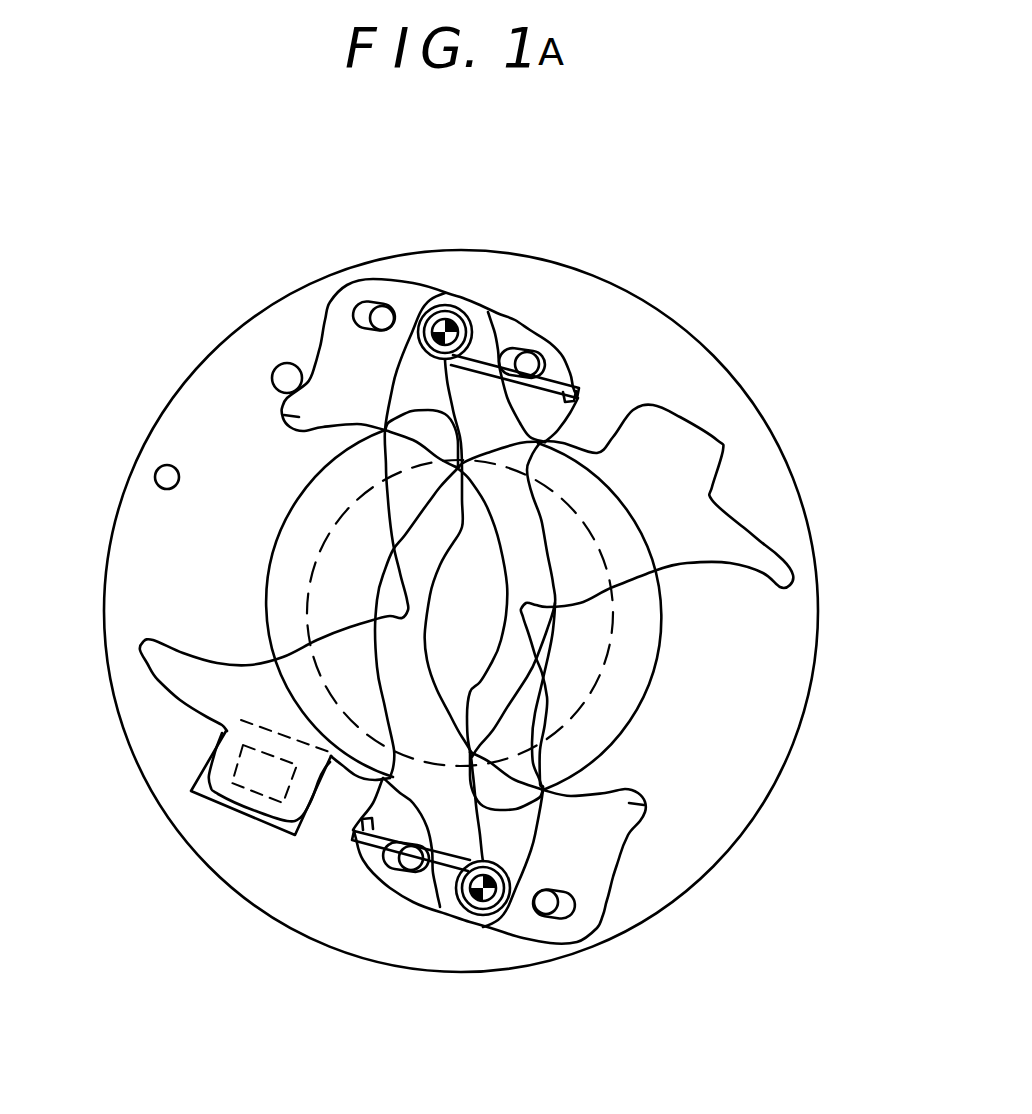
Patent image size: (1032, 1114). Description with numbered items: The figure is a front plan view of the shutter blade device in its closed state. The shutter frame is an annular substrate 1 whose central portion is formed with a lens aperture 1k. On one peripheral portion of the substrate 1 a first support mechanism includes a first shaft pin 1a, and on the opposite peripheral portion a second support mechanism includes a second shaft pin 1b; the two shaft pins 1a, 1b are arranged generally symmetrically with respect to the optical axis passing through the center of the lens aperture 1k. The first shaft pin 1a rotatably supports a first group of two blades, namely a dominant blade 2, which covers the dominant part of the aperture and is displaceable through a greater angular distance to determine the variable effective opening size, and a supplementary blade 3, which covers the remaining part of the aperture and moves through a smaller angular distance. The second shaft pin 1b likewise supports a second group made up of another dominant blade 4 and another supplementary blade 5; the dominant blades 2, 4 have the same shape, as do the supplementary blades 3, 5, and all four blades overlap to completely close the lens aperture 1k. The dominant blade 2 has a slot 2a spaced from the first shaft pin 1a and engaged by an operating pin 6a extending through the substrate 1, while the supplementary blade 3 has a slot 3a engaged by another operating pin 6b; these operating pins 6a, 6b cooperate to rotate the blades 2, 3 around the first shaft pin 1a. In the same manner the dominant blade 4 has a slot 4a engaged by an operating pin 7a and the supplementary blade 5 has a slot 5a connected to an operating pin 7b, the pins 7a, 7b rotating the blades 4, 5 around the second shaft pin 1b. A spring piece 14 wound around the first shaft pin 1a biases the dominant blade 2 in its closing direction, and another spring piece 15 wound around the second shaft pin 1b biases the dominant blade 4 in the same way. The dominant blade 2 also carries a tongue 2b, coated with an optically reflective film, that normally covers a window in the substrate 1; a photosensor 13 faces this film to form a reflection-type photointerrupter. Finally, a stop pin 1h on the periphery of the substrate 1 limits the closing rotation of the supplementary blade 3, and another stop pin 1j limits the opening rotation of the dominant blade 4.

The annular substrate 1 is at (762, 412).
The first shaft pin 1a is at (466, 318).
The second shaft pin 1b is at (483, 917).
The stop pin 1h is at (280, 363).
The stop pin 1j is at (156, 470).
The lens aperture 1k is at (605, 633).
The dominant blade 2 is at (133, 655).
The slot 2a is at (567, 352).
The tongue 2b is at (203, 797).
The supplementary blade 3 is at (288, 416).
The slot 3a is at (392, 304).
The dominant blade 4 is at (795, 568).
The slot 4a is at (403, 875).
The supplementary blade 5 is at (650, 808).
The slot 5a is at (580, 907).
The operating pin 6a is at (532, 356).
The operating pin 6b is at (360, 303).
The operating pin 7a is at (370, 880).
The operating pin 7b is at (560, 887).
The photosensor 13 is at (271, 794).
The spring piece 14 is at (446, 305).
The spring piece 15 is at (478, 918).